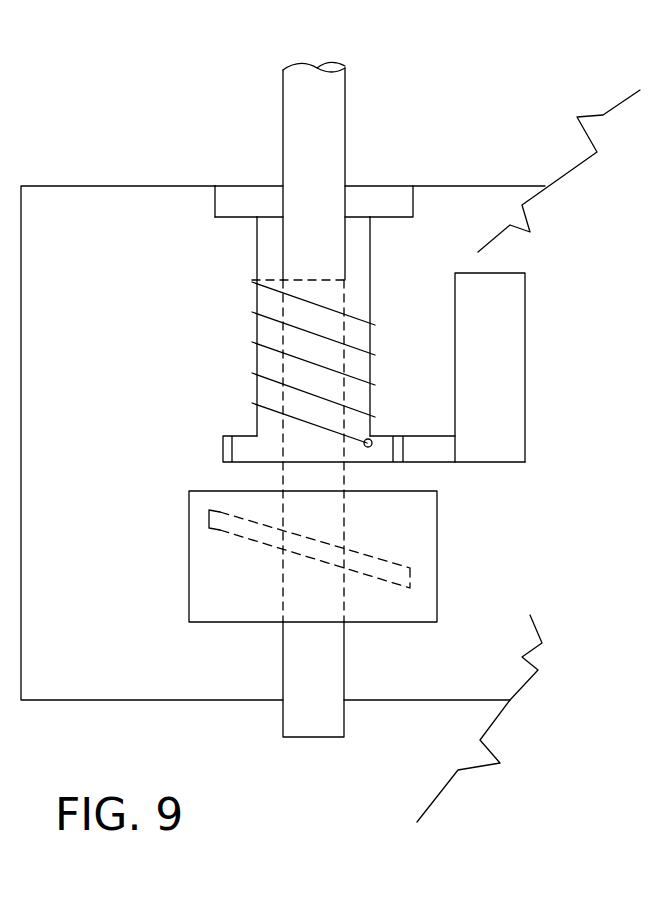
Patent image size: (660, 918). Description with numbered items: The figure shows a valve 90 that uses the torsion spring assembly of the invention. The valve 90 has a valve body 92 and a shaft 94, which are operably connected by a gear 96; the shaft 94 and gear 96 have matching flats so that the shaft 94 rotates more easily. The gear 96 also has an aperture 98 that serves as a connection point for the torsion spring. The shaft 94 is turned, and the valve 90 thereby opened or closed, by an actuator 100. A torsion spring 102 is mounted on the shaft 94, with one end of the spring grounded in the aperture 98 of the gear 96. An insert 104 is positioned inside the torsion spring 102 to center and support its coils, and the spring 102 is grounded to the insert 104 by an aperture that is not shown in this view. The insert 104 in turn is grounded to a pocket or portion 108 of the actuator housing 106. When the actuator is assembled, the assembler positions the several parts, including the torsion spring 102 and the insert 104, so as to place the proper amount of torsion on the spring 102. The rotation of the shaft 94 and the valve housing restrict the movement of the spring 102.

The valve 90 is at (220, 527).
The valve body 92 is at (412, 535).
The shaft 94 is at (317, 663).
The gear 96 is at (245, 448).
The aperture 98 is at (370, 453).
The actuator 100 is at (492, 348).
The torsion spring 102 is at (255, 312).
The insert 104 is at (370, 243).
The actuator housing 106 is at (182, 683).
The portion of the actuator housing 108 is at (383, 203).